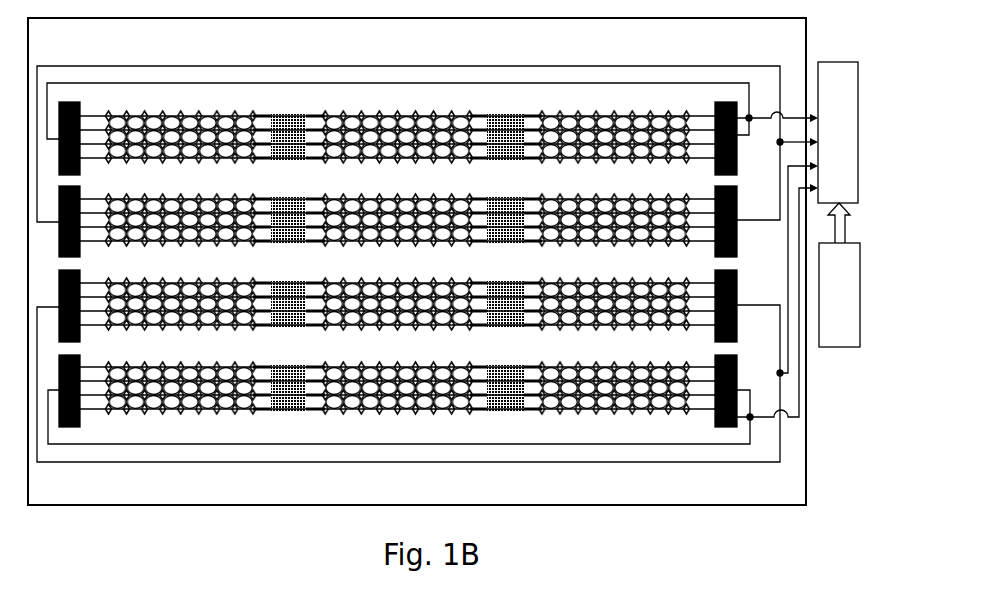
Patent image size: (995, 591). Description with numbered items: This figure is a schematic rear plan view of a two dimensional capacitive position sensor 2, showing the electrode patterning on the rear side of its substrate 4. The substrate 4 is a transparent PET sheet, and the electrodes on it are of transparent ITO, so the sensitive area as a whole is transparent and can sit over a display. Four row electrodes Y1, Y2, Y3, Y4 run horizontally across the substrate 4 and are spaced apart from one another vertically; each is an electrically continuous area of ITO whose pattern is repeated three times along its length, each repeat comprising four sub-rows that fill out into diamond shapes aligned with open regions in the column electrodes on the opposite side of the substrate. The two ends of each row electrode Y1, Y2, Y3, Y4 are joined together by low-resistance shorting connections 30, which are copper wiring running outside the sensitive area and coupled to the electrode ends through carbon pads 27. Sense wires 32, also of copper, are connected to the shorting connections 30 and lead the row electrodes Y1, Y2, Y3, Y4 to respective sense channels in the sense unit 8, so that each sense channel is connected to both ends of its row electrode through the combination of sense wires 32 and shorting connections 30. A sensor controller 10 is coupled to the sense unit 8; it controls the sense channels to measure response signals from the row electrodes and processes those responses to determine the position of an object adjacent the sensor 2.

The two dimensional capacitive position sensor 2 is at (284, 513).
The substrate 4 is at (63, 492).
The sense unit 8 is at (838, 62).
The sensor controller 10 is at (853, 307).
The carbon pads 27 is at (80, 193).
The shorting connections 30 is at (445, 83).
The sense wires 32 is at (796, 138).
The row electrode Y1 is at (290, 114).
The row electrode Y2 is at (290, 197).
The row electrode Y3 is at (290, 281).
The row electrode Y4 is at (290, 365).